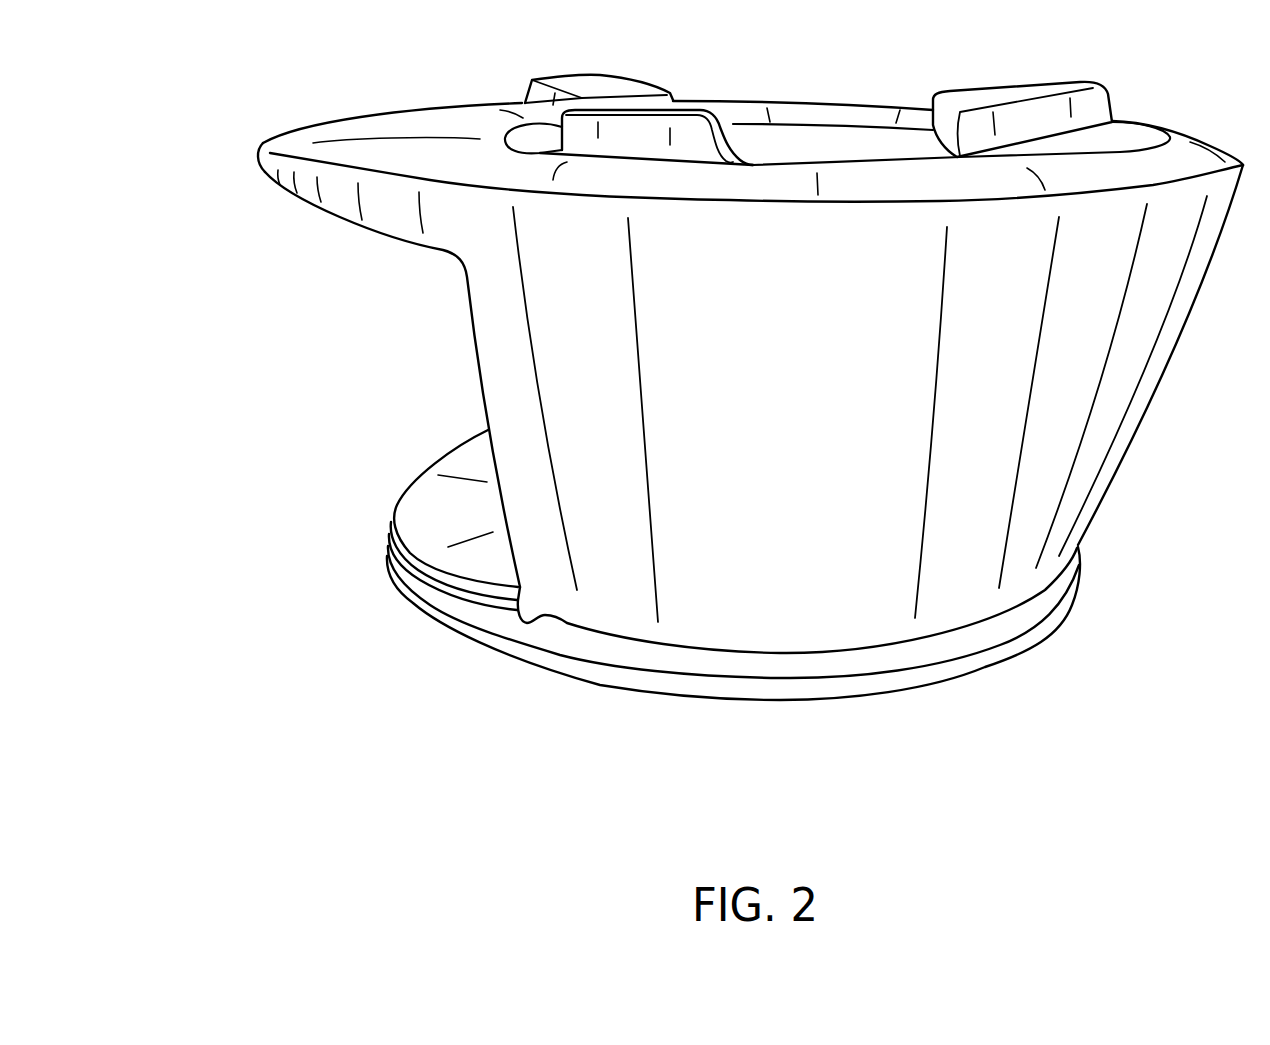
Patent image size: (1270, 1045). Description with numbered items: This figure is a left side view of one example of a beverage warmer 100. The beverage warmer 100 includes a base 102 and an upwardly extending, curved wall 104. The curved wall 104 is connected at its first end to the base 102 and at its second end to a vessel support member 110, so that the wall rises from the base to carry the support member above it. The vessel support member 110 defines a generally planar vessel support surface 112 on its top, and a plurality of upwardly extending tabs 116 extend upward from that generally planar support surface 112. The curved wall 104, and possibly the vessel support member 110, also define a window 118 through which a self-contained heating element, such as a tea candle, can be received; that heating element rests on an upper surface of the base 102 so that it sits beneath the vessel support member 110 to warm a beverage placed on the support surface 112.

The beverage warmer 100 is at (156, 94).
The base 102 is at (463, 513).
The curved wall 104 is at (847, 400).
The vessel support member 110 is at (258, 163).
The vessel support surface 112 is at (427, 117).
The upwardly extending tabs 116 is at (580, 77).
The window 118 is at (475, 342).